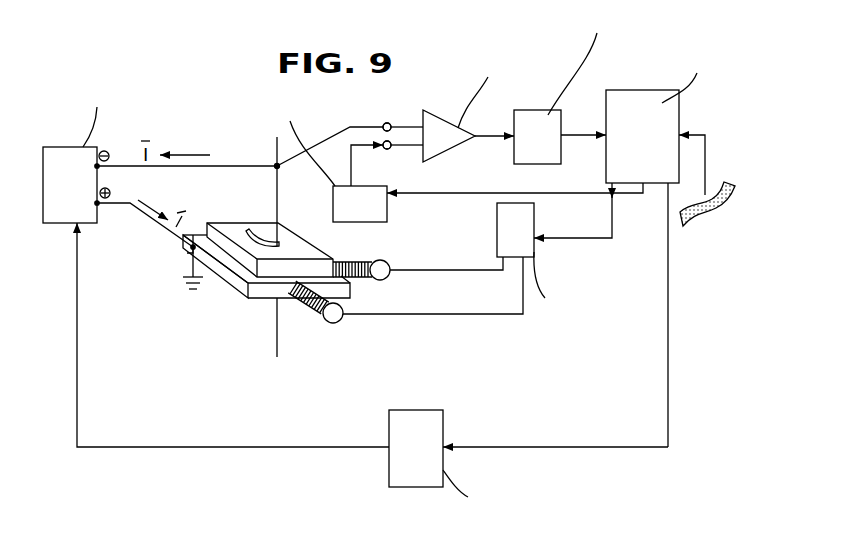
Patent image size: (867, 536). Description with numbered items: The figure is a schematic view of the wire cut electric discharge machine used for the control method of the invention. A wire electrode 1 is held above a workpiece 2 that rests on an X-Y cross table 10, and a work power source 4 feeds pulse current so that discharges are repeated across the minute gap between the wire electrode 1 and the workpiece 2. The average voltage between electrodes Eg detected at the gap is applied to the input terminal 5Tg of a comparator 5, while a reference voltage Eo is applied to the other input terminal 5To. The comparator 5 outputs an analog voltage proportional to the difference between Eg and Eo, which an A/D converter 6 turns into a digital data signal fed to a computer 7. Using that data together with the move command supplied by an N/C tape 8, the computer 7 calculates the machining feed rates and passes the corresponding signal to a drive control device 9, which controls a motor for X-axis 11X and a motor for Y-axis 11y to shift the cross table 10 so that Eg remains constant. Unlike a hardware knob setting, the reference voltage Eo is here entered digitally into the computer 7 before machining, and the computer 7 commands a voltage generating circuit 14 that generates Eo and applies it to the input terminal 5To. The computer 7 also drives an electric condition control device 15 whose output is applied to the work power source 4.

The wire electrode 1 is at (277, 338).
The workpiece 2 is at (231, 223).
The work power source 4 is at (60, 224).
The comparator 5 is at (453, 118).
The input terminal 5Tg is at (384, 124).
The input terminal 5To is at (372, 163).
The average voltage between electrodes Eg is at (395, 117).
The reference voltage Eo is at (384, 150).
The A/D converter 6 is at (540, 108).
The computer 7 is at (640, 90).
The N/C tape 8 is at (707, 221).
The drive control device 9 is at (497, 222).
The X-Y cross table 10 is at (233, 282).
The motor for X-axis 11X is at (388, 263).
The motor for Y-axis 11y is at (337, 322).
The voltage generating circuit 14 is at (351, 213).
The electric condition control device 15 is at (389, 472).